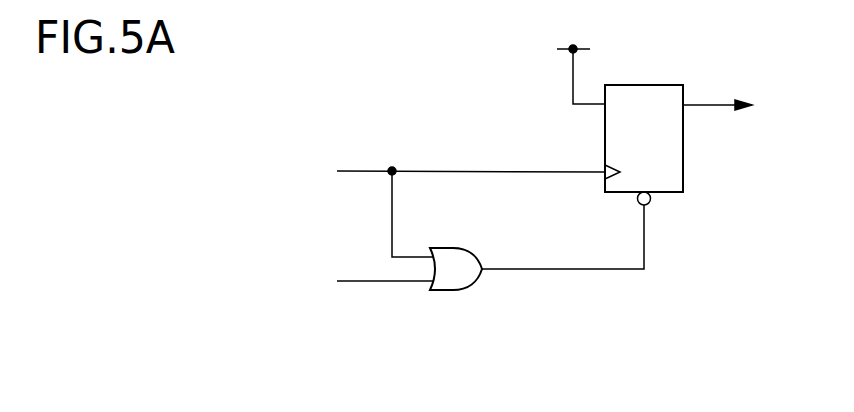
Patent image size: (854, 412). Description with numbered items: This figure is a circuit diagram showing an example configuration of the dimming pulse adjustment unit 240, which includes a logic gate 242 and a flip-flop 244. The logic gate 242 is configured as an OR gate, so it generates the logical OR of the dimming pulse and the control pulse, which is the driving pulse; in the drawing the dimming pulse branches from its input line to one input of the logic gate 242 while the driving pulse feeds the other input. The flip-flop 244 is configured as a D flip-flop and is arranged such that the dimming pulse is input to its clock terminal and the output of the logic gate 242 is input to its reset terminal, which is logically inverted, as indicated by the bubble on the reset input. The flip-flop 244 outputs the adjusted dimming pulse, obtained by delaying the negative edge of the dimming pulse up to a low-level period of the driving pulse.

The dimming pulse adjustment unit 240 is at (535, 214).
The logic gate 242 is at (443, 292).
The flip-flop 244 is at (642, 84).